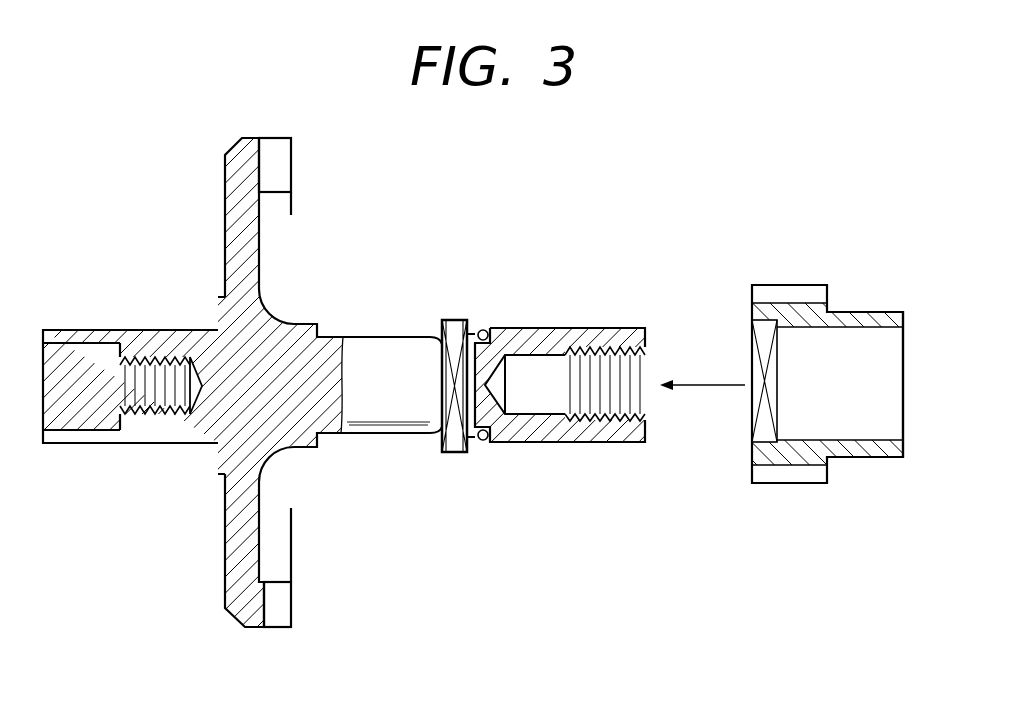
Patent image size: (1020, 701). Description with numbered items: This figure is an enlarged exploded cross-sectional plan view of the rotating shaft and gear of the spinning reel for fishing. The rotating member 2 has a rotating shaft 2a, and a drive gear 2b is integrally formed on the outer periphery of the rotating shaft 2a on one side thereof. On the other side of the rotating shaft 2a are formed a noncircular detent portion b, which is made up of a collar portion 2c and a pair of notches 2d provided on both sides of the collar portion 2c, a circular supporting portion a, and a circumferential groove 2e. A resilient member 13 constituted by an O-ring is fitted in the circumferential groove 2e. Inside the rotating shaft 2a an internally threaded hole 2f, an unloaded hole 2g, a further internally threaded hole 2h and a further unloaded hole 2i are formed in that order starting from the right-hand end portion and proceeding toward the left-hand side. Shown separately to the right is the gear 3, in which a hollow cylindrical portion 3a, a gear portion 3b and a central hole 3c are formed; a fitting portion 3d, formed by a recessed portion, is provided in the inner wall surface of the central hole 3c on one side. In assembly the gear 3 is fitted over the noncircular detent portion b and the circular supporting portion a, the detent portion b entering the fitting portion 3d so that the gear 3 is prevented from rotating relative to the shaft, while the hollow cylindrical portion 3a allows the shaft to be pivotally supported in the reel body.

The rotating member 2 is at (93, 331).
The rotating shaft 2a is at (150, 330).
The drive gear 2b is at (240, 150).
The collar portion 2c is at (452, 320).
The notches 2d is at (443, 367).
The circumferential groove 2e is at (483, 328).
The internally threaded hole 2f is at (597, 418).
The unloaded hole 2g is at (532, 413).
The internally threaded hole 2h is at (153, 410).
The unloaded hole 2i is at (80, 429).
The resilient member 13 is at (483, 441).
The circular supporting portion a is at (560, 327).
The noncircular detent portion b is at (428, 407).
The gear 3 is at (779, 286).
The hollow cylindrical portion 3a is at (885, 312).
The gear portion 3b is at (818, 287).
The central hole 3c is at (858, 437).
The fitting portion 3d is at (757, 322).